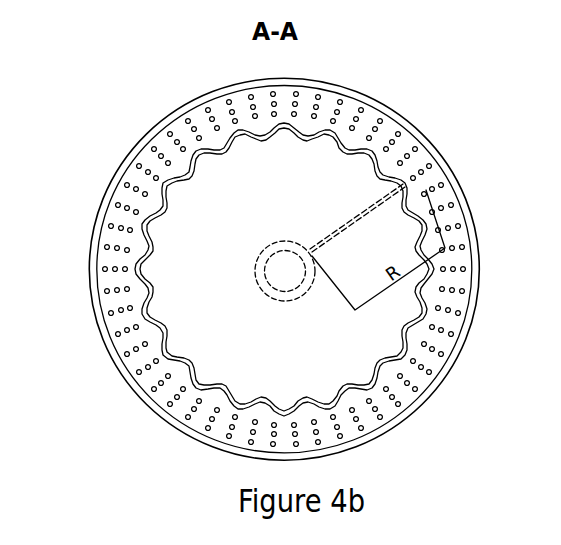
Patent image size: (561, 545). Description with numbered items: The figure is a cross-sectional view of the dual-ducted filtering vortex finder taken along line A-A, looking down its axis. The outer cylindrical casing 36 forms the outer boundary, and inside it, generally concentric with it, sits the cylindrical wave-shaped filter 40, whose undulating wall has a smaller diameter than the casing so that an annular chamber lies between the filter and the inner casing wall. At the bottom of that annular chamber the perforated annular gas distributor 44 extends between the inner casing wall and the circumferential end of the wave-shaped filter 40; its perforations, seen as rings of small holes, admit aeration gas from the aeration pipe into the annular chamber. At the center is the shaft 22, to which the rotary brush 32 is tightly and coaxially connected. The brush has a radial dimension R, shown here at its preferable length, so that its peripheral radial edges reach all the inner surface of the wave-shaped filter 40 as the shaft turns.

The shaft 22 is at (278, 261).
The rotary brush 32 is at (387, 178).
The outer cylindrical casing 36 is at (115, 368).
The cylindrical wave-shaped filter 40 is at (133, 274).
The perforated annular gas distributor 44 is at (120, 313).